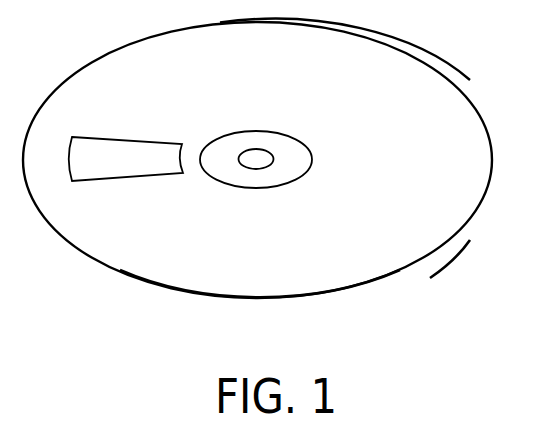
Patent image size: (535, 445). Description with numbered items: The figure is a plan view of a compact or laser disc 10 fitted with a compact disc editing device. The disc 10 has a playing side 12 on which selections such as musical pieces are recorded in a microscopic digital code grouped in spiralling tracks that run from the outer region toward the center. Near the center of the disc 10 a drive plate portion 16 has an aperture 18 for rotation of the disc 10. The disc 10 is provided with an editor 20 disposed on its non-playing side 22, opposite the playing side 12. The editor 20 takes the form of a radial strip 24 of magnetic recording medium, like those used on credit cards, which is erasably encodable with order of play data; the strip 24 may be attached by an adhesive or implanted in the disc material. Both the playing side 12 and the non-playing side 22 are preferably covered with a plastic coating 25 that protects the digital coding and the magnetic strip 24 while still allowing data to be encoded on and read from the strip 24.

The compact disc 10 is at (284, 84).
The playing side 12 is at (420, 215).
The drive plate portion 16 is at (298, 172).
The aperture 18 is at (262, 157).
The editor 20 is at (107, 112).
The non-playing side 22 is at (418, 75).
The magnetic strip 24 is at (118, 163).
The plastic coating 25 is at (312, 278).